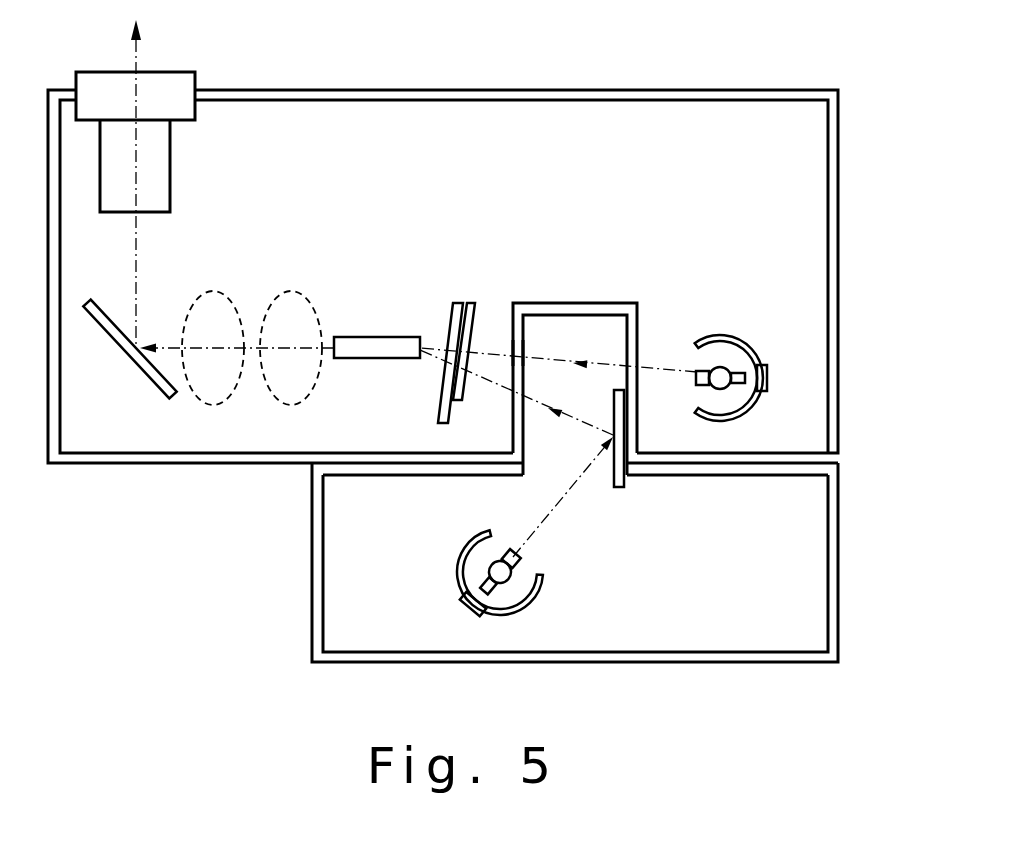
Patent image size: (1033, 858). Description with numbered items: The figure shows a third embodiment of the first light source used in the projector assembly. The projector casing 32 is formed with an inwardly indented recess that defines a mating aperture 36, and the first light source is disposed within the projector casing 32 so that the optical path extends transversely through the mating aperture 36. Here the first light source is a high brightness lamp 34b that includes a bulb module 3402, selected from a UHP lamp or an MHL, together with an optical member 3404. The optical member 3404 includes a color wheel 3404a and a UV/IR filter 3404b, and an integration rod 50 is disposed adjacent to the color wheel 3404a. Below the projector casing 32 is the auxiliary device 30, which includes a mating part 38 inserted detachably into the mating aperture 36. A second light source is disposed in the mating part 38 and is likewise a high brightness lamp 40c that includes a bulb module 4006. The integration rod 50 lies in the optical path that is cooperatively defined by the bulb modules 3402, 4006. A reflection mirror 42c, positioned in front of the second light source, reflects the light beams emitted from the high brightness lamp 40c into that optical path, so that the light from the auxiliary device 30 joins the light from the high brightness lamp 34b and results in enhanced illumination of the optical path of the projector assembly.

The auxiliary device 30 is at (862, 524).
The projector casing 32 is at (862, 113).
The mating aperture 36 is at (556, 298).
The mating part 38 is at (524, 334).
The integration rod 50 is at (365, 337).
The optical member 3404 is at (484, 310).
The color wheel 3404a is at (457, 302).
The UV/IR filter 3404b is at (503, 323).
The bulb module 3402 is at (748, 358).
The high brightness lamp 34b is at (725, 382).
The reflection mirror 42c is at (625, 480).
The bulb module 4006 is at (467, 571).
The high brightness lamp 40c is at (513, 580).